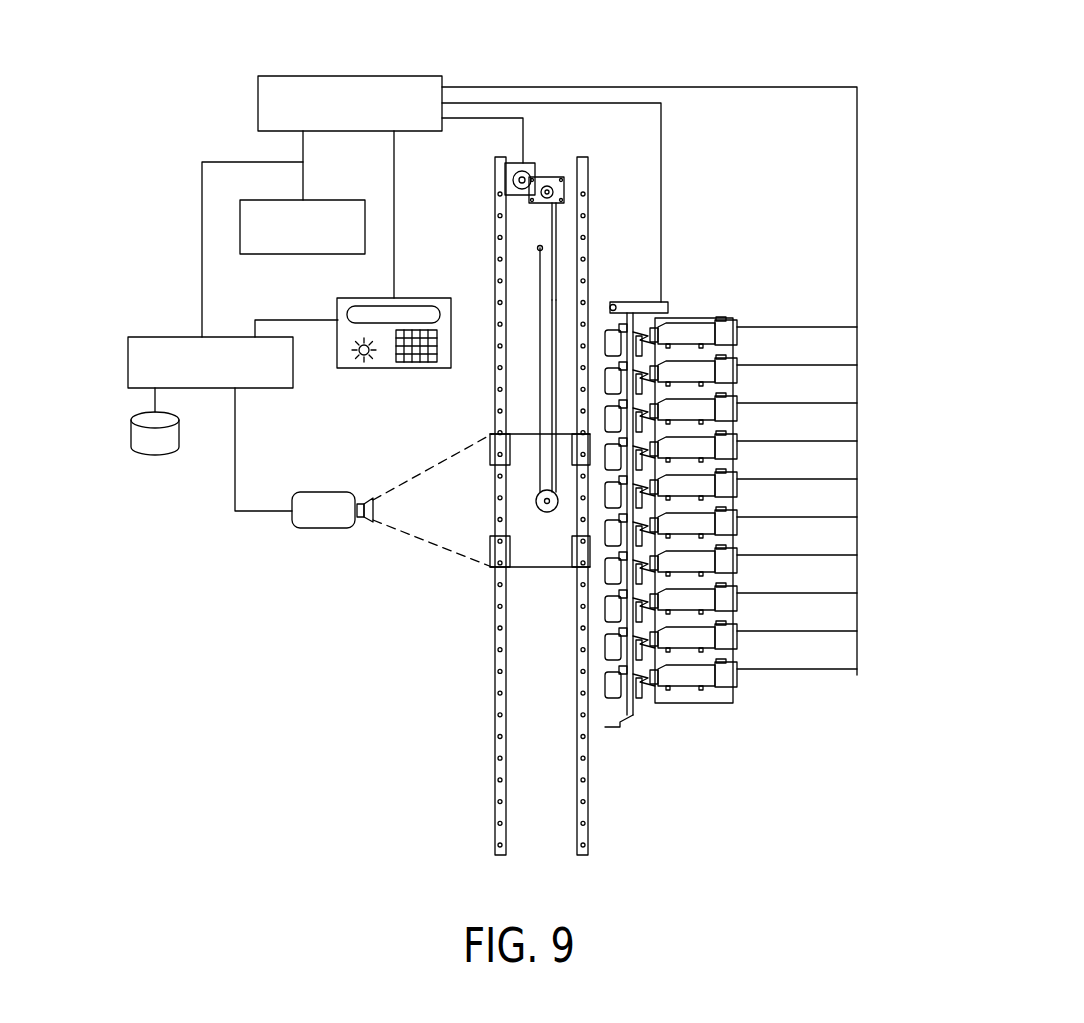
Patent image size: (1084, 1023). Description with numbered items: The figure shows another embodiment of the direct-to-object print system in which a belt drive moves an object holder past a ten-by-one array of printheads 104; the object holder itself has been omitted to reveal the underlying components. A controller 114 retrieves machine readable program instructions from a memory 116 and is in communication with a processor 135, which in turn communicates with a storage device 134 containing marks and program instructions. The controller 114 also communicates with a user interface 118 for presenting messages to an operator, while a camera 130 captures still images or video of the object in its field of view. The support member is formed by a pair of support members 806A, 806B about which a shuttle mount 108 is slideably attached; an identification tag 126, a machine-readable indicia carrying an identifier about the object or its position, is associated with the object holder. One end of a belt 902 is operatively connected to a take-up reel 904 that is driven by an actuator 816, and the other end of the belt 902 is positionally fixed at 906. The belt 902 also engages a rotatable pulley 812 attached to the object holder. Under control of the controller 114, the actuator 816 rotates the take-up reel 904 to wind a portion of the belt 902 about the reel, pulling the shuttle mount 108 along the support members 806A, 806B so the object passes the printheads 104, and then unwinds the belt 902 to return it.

The controller 114 is at (358, 75).
The memory 116 is at (320, 200).
The processor 135 is at (167, 337).
The storage device 134 is at (152, 460).
The camera 130 is at (325, 492).
The user interface 118 is at (390, 368).
The actuator 816 is at (530, 165).
The take-up reel 904 is at (548, 208).
The belt 902 is at (557, 253).
The fixed end of belt 906 is at (537, 256).
The rotatable pulley 812 is at (536, 501).
The shuttle mount 108 is at (528, 567).
The identification tag 126 is at (668, 303).
The array of printheads 104 is at (722, 305).
The support member 806A is at (494, 812).
The support member 806B is at (589, 812).